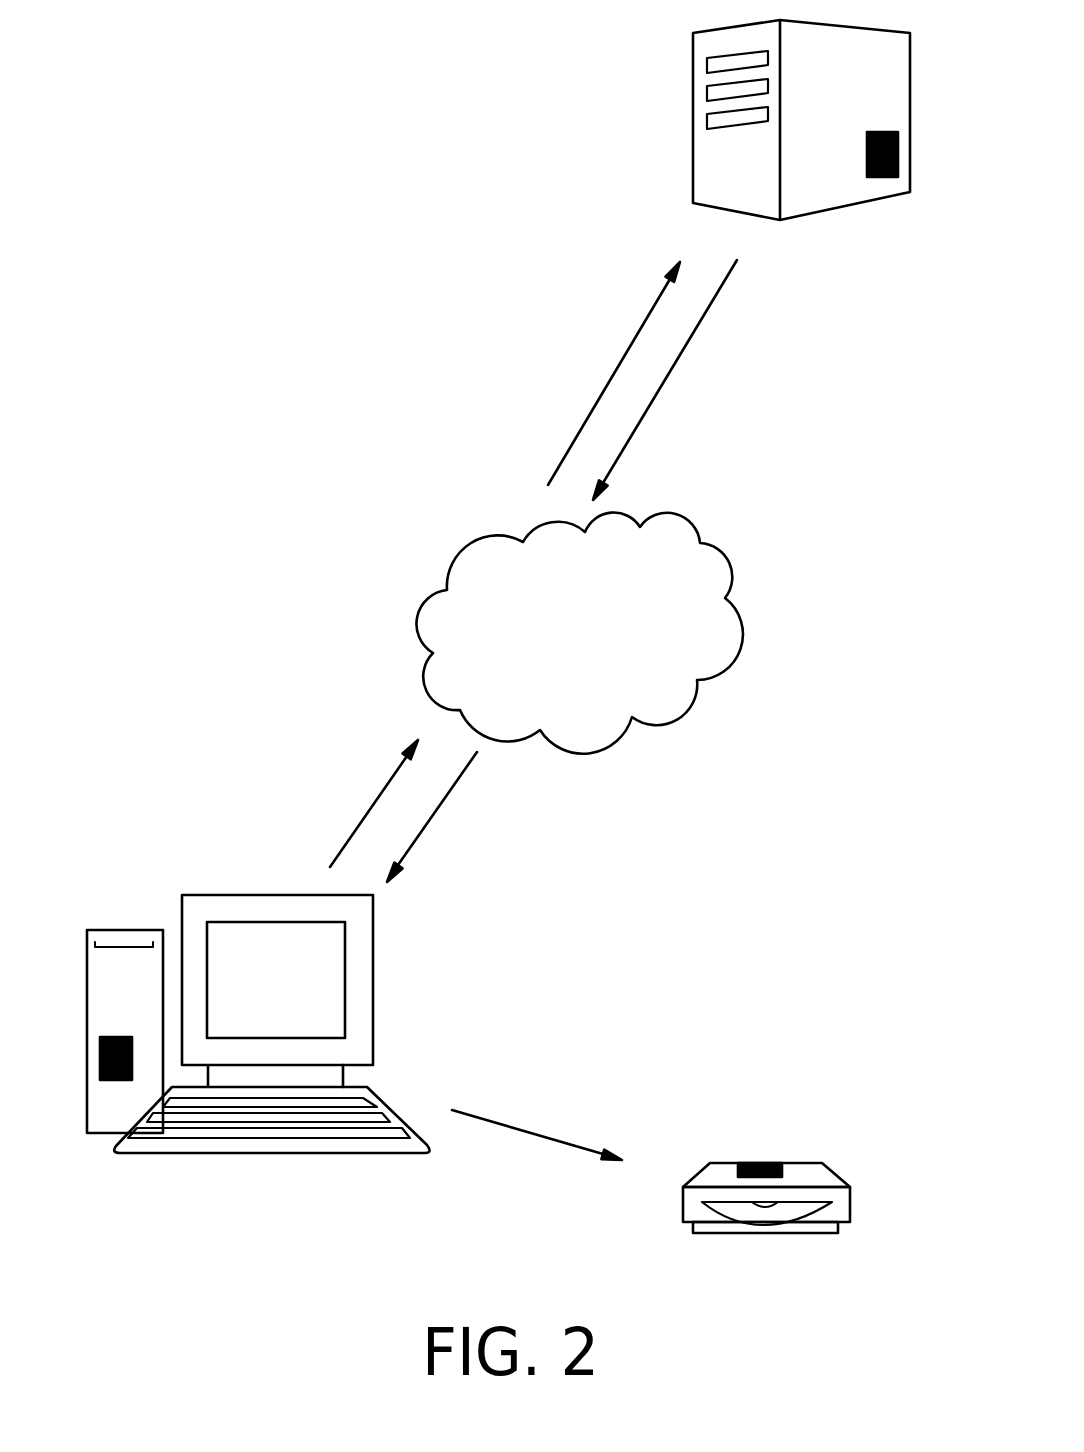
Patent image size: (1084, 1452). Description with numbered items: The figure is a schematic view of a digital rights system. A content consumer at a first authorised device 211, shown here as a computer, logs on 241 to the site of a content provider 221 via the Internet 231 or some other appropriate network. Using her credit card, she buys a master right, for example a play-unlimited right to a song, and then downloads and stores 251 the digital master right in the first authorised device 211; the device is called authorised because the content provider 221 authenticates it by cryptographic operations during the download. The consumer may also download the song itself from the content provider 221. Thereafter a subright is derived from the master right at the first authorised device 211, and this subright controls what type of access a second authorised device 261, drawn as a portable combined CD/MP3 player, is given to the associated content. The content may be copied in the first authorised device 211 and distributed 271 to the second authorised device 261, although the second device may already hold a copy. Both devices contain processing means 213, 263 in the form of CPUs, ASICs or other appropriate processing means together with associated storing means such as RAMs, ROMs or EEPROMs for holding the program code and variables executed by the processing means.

The first authorised device 211 is at (373, 1135).
The processing means 213 is at (108, 1080).
The content provider 221 is at (822, 188).
The Internet 231 is at (515, 570).
The logging on 241 is at (582, 375).
The downloading and storing 251 is at (723, 330).
The second authorised device 261 is at (838, 1205).
The processing means 263 is at (767, 1162).
The distributing 271 is at (537, 1118).